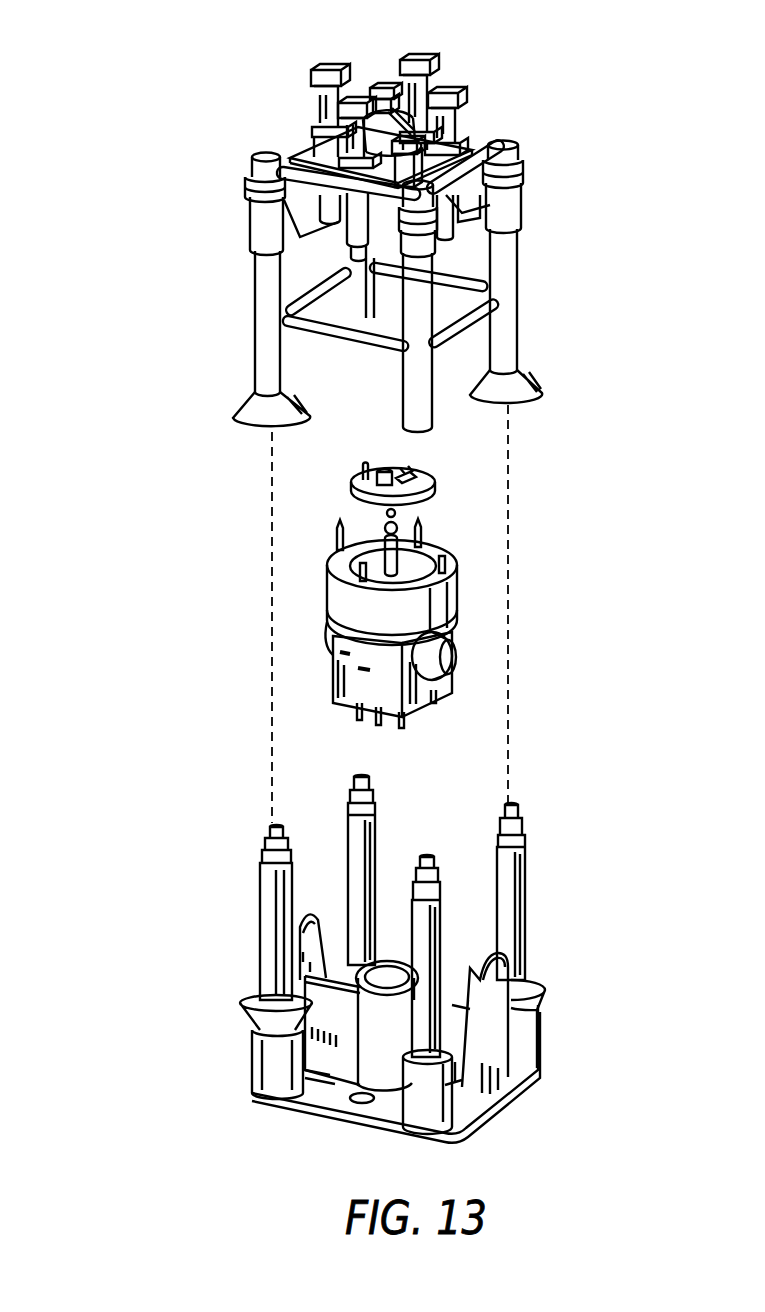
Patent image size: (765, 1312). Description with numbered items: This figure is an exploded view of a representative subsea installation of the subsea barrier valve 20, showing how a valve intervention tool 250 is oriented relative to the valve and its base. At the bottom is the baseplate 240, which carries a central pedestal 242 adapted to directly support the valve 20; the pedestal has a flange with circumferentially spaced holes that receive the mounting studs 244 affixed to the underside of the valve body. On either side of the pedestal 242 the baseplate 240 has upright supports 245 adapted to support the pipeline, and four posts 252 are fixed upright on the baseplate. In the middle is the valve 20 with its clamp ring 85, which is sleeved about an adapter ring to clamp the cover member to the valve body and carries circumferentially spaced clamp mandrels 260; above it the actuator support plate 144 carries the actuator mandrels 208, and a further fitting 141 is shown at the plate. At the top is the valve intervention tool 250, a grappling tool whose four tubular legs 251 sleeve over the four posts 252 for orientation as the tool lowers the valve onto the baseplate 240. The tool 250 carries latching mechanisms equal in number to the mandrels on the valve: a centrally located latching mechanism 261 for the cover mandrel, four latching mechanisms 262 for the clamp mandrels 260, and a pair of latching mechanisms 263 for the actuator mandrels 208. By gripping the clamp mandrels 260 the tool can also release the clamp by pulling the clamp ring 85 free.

The valve intervention tool 250 is at (216, 200).
The tubular legs 251 is at (260, 323).
The latching mechanisms 262 is at (420, 62).
The latching mechanisms 263 is at (381, 87).
The latching mechanism 261 is at (423, 88).
The actuator support plate 144 is at (353, 486).
The actuator mandrels 208 is at (360, 462).
The connector 141 is at (445, 470).
The clamp mandrels 260 is at (360, 566).
The clamp ring 85 is at (458, 593).
The subsea barrier valve 20 is at (330, 658).
The mounting studs 244 is at (398, 722).
The posts 252 is at (352, 838).
The upright supports 245 is at (302, 929).
The baseplate 240 is at (313, 1093).
The central pedestal 242 is at (375, 1063).